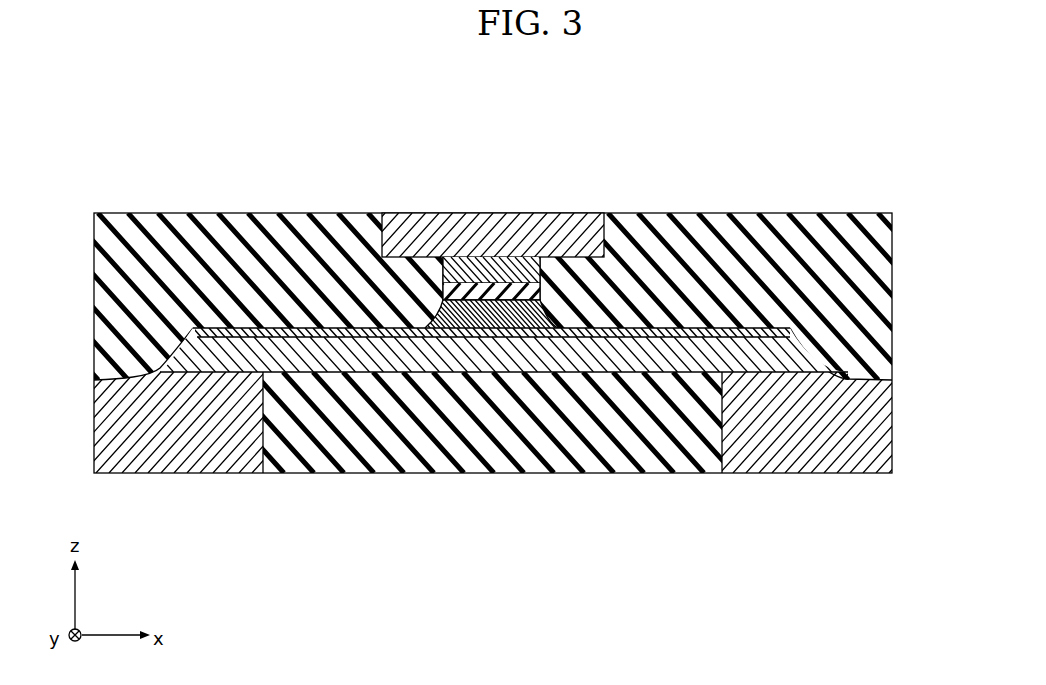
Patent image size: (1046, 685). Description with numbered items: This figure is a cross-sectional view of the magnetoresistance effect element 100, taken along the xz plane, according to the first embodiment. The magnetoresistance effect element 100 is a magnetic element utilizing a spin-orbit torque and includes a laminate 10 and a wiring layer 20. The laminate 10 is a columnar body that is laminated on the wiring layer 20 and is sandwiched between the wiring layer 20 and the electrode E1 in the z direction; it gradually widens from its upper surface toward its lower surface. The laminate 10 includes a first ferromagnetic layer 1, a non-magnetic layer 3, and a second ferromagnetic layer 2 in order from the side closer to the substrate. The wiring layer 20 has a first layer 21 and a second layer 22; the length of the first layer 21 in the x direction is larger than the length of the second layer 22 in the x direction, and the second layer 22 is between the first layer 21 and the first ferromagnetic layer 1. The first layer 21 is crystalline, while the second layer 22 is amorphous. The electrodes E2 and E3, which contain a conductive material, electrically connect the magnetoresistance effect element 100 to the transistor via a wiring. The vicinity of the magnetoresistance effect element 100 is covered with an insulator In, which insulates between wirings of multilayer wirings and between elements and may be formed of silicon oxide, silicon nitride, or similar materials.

The magnetoresistance effect element 100 is at (757, 140).
The laminate 10 is at (505, 205).
The first ferromagnetic layer 1 is at (547, 317).
The second ferromagnetic layer 2 is at (480, 270).
The non-magnetic layer 3 is at (500, 292).
The insulator In is at (278, 268).
The electrode E1 is at (396, 256).
The electrode E2 is at (177, 452).
The electrode E3 is at (797, 447).
The wiring layer 20 is at (501, 469).
The first layer 21 is at (402, 353).
The second layer 22 is at (457, 330).